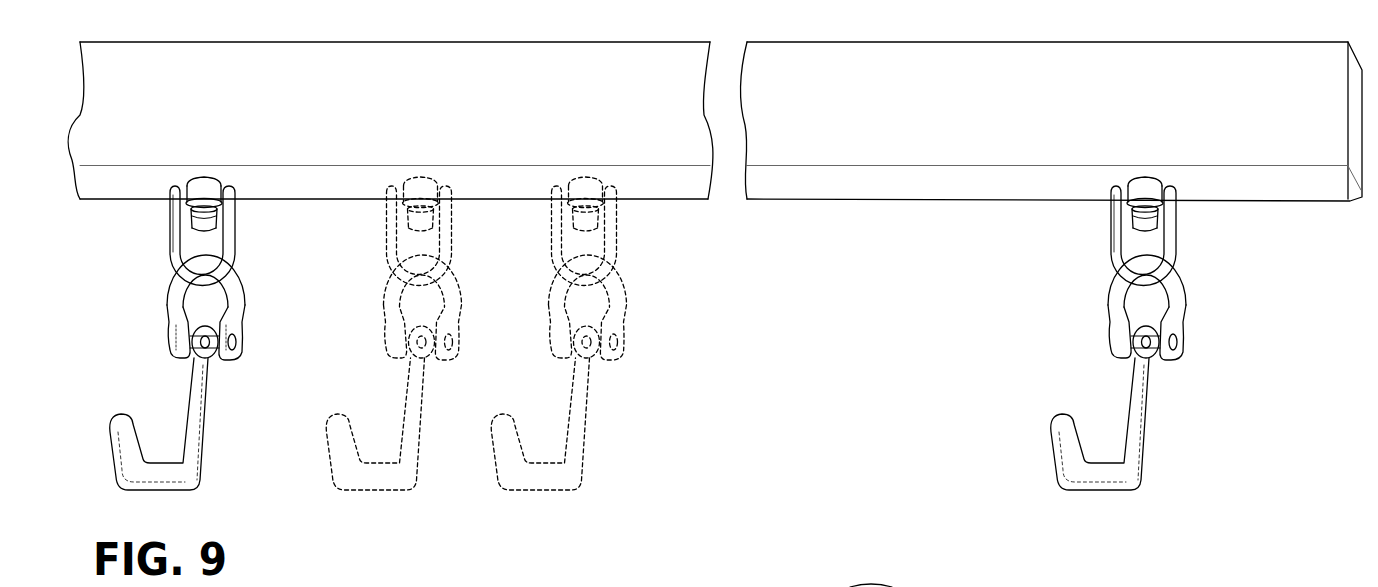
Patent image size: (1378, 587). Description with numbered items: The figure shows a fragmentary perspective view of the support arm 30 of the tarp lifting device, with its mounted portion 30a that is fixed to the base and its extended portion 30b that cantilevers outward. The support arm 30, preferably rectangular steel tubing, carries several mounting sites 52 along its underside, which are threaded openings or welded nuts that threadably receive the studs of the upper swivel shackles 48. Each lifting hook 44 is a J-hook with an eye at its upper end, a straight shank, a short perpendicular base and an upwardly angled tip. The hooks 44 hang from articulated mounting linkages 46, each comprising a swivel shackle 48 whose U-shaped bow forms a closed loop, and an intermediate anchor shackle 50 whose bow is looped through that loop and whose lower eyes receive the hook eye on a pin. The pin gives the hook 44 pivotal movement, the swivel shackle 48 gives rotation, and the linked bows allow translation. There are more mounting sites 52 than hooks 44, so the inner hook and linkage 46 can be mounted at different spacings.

The support arm 30 is at (826, 35).
The mounted portion 30a is at (516, 66).
The extended portion 30b is at (1052, 68).
The lifting hook 44 is at (199, 488).
The articulated mounting linkage 46 is at (266, 265).
The upper swivel shackle 48 is at (243, 225).
The intermediate anchor shackle 50 is at (252, 309).
The mounting site 52 is at (213, 176).